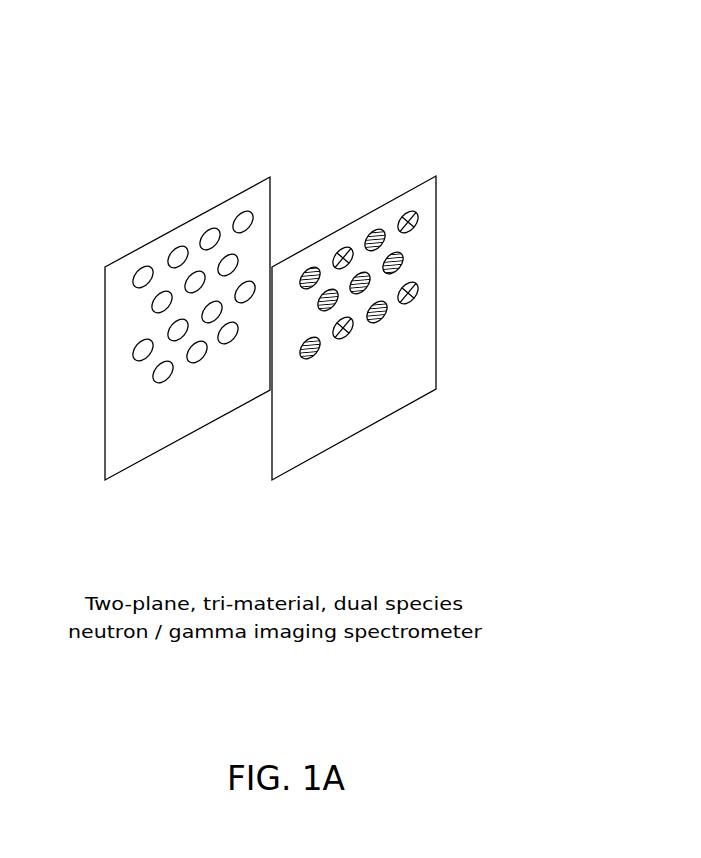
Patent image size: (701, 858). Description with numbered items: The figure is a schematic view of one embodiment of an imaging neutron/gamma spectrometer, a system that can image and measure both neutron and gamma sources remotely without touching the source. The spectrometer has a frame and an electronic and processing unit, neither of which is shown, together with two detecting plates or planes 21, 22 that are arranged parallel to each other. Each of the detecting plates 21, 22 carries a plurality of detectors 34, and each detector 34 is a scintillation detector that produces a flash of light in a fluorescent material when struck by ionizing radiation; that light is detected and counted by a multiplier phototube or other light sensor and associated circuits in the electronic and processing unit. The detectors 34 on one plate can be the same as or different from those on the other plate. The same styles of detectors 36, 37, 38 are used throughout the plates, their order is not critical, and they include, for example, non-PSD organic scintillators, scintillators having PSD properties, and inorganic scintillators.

The detecting plate 21 is at (130, 450).
The detecting plate 22 is at (317, 440).
The detector 34 is at (342, 236).
The detector 36 is at (247, 212).
The detector 37 is at (378, 228).
The detector 38 is at (408, 211).